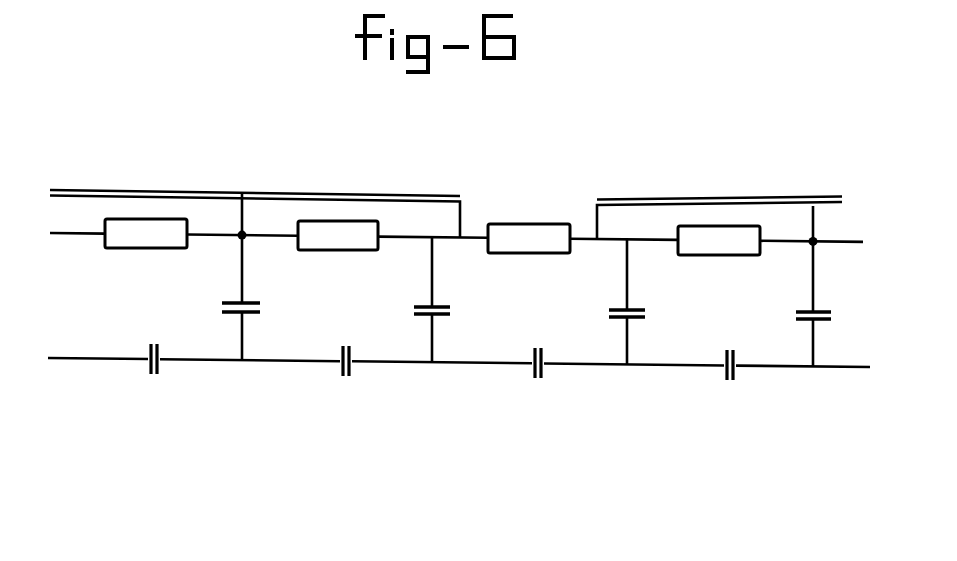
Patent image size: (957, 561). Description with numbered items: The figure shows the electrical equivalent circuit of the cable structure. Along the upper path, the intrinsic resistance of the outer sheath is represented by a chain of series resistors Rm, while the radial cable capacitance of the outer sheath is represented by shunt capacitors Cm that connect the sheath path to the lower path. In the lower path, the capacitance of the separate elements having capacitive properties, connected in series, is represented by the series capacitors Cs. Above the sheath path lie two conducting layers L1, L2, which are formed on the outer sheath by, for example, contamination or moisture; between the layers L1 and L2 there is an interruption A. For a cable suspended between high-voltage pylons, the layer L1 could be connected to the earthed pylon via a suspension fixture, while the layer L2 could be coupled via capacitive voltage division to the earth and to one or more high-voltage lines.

The conducting layer L1 is at (257, 195).
The conducting layer L2 is at (759, 204).
The interruption A is at (518, 183).
The intrinsic resistance of the outer sheath Rm is at (545, 244).
The radial cable capacitance of the outer sheath Cm is at (246, 306).
The capacitance of the separate elements having capacitive properties Cs is at (159, 366).